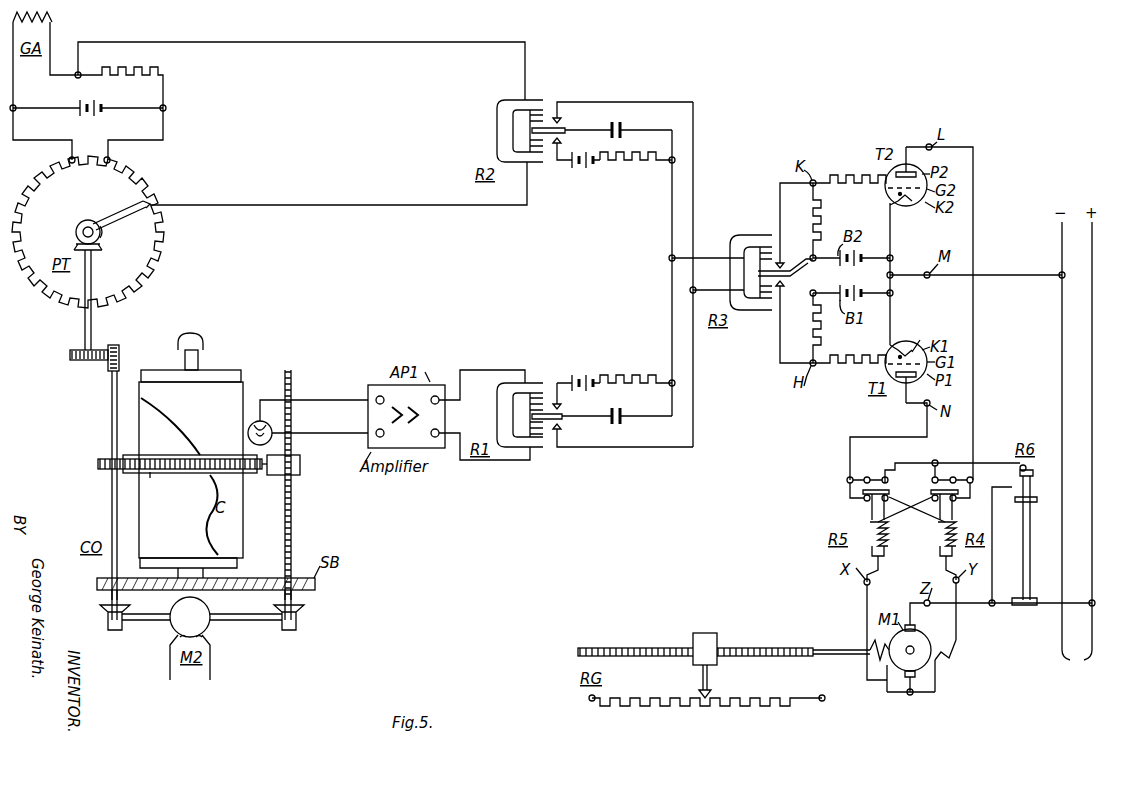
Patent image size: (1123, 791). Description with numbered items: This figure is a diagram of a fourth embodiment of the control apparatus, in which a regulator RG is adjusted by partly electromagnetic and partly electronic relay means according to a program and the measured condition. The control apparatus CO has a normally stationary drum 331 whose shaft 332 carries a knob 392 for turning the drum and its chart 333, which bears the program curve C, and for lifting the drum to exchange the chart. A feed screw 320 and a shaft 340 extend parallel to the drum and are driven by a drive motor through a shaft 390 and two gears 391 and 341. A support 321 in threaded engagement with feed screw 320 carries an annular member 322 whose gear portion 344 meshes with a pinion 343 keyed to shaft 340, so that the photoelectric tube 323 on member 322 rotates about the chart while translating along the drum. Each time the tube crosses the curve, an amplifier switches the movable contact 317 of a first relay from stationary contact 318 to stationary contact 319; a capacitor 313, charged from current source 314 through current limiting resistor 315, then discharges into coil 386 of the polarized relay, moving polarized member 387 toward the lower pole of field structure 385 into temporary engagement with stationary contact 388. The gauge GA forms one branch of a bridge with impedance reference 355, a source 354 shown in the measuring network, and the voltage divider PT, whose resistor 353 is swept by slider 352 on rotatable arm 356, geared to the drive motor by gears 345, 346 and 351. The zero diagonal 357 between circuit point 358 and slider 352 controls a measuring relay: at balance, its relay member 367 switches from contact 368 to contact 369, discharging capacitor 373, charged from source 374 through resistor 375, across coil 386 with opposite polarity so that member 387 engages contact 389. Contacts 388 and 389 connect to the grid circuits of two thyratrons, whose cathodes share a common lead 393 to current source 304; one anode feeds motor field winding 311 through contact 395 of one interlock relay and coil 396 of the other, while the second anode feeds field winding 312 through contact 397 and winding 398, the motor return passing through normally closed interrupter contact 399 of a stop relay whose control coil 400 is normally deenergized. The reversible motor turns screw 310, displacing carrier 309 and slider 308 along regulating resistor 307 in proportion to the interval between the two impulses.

The current source 304 is at (1070, 660).
The regulating resistor 307 is at (683, 711).
The slider 308 is at (700, 688).
The carrier 309 is at (699, 633).
The screw 310 is at (753, 642).
The field winding 311 is at (955, 654).
The field winding 312 is at (870, 640).
The capacitor 313 is at (625, 422).
The current source 314 is at (596, 374).
The current limiting resistor 315 is at (654, 376).
The movable contact 317 is at (548, 420).
The stationary contact 318 is at (558, 408).
The stationary contact 319 is at (558, 426).
The feed screw 320 is at (290, 516).
The support 321 is at (300, 467).
The annular member 322 is at (138, 461).
The photoelectric tube 323 is at (259, 402).
The drum 331 is at (202, 372).
The shaft 332 is at (185, 358).
The chart 333 is at (242, 503).
The shaft 340 is at (113, 522).
The gear 341 is at (114, 623).
The pinion 343 is at (100, 466).
The gear portion 344 is at (152, 476).
The gear 345 is at (114, 348).
The gear 346 is at (70, 358).
The gear 351 is at (78, 237).
The slider 352 is at (140, 203).
The resistor 353 is at (38, 293).
The battery 354 is at (103, 114).
The impedance reference 355 is at (111, 80).
The rotatable arm 356 is at (105, 233).
The zero diagonal 357 is at (424, 42).
The circuit point 358 is at (76, 78).
The relay member 367 is at (549, 125).
The contact 368 is at (563, 139).
The contact 369 is at (563, 122).
The capacitor 373 is at (625, 124).
The current source 374 is at (561, 168).
The resistor 375 is at (609, 164).
The field structure 385 is at (758, 238).
The coil 386 is at (708, 274).
The polarized member 387 is at (775, 304).
The stationary contact 388 is at (784, 290).
The stationary contact 389 is at (778, 263).
The shaft 390 is at (227, 624).
The gear 391 is at (289, 626).
The knob 392 is at (202, 342).
The common lead 393 is at (1004, 274).
The contact 395 is at (870, 476).
The coil 396 is at (938, 534).
The contact 397 is at (952, 455).
The winding 398 is at (884, 559).
The interrupter contact 399 is at (1016, 606).
The control coil 400 is at (1020, 472).